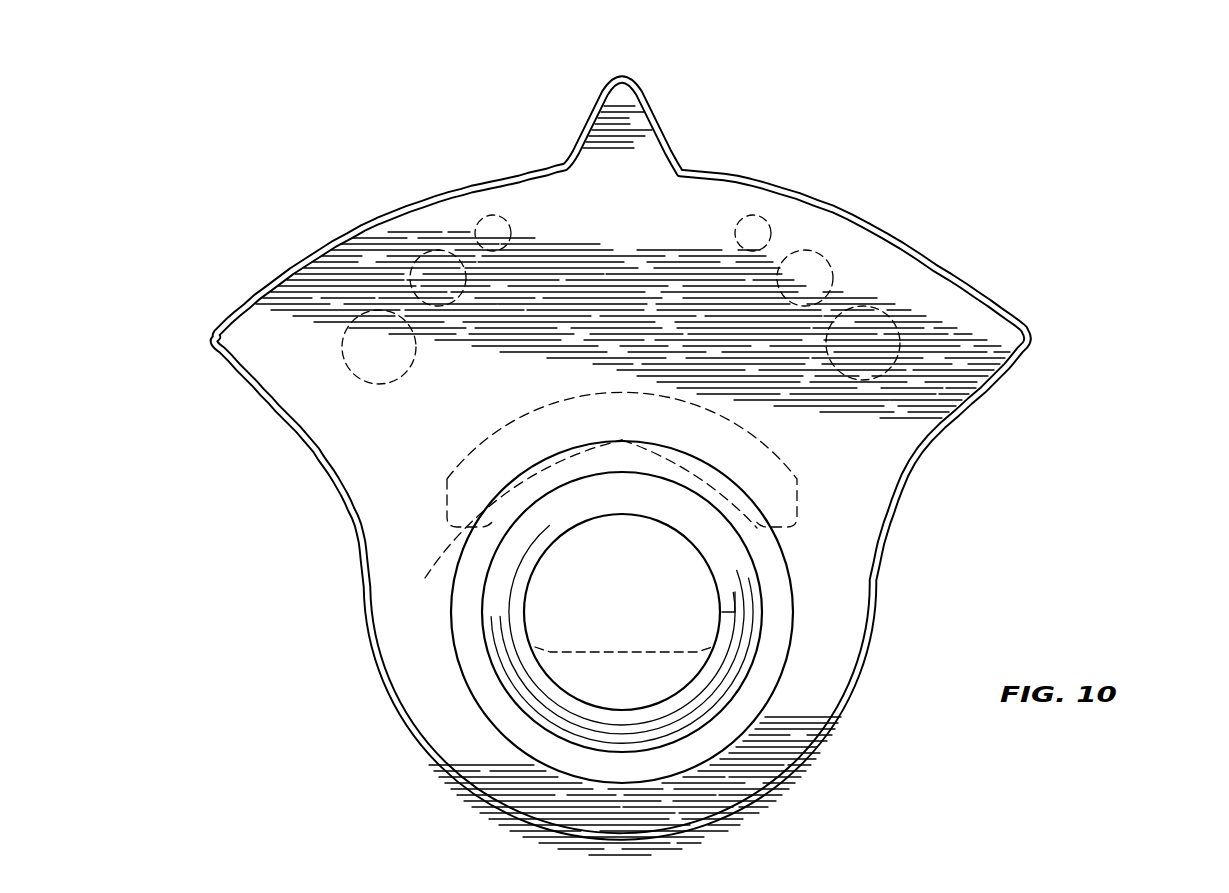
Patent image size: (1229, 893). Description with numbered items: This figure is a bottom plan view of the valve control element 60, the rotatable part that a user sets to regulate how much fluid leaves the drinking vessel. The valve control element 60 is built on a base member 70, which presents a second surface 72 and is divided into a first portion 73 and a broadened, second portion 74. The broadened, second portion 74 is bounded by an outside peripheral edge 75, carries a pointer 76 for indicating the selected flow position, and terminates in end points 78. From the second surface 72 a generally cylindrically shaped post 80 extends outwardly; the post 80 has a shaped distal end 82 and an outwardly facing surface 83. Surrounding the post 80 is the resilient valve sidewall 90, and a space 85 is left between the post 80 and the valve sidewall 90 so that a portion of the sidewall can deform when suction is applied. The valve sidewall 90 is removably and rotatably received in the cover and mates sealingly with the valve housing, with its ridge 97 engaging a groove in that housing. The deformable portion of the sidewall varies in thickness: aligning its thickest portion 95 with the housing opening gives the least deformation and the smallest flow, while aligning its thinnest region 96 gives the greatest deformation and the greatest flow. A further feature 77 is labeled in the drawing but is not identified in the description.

The valve control element 60 is at (665, 441).
The base member 70 is at (384, 721).
The second surface 72 is at (871, 438).
The first portion 73 is at (458, 736).
The broadened, second portion 74 is at (635, 210).
The outside peripheral edge 75 is at (838, 205).
The pointer 76 is at (623, 76).
The dashed contour 77 is at (505, 517).
The end points 78 is at (212, 340).
The post 80 is at (637, 598).
The shaped distal end 82 is at (641, 690).
The outwardly facing surface 83 is at (708, 549).
The space 85 is at (638, 511).
The valve sidewall 90 is at (548, 489).
The thickest portion 95 is at (752, 578).
The thinnest region 96 is at (486, 636).
The ridge 97 is at (577, 442).